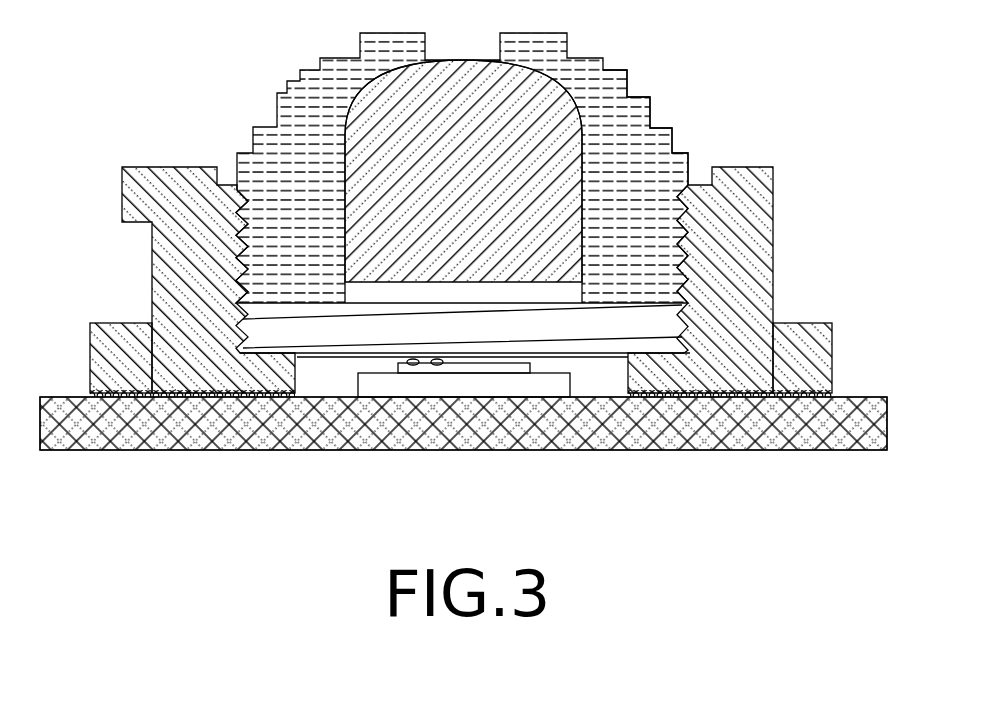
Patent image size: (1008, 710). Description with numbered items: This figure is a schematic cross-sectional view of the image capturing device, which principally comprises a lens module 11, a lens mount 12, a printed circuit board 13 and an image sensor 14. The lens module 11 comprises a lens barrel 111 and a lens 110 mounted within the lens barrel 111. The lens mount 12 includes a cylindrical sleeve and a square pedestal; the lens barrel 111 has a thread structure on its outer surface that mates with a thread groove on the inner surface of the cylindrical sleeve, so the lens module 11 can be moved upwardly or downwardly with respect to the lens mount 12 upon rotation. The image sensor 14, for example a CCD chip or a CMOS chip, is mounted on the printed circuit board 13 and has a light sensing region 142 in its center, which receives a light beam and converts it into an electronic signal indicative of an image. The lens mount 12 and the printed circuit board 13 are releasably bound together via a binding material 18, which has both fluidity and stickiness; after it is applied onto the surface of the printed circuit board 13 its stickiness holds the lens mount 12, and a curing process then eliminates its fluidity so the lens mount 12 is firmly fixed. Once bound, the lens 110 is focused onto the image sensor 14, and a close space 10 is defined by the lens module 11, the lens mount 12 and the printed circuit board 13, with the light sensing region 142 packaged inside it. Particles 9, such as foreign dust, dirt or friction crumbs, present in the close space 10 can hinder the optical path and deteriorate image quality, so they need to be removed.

The particles 9 is at (423, 363).
The close space 10 is at (693, 213).
The lens module 11 is at (327, 90).
The lens mount 12 is at (160, 188).
The printed circuit board 13 is at (153, 448).
The image sensor 14 is at (503, 387).
The binding material 18 is at (90, 345).
The lens 110 is at (515, 127).
The lens barrel 111 is at (622, 163).
The light sensing region 142 is at (423, 366).